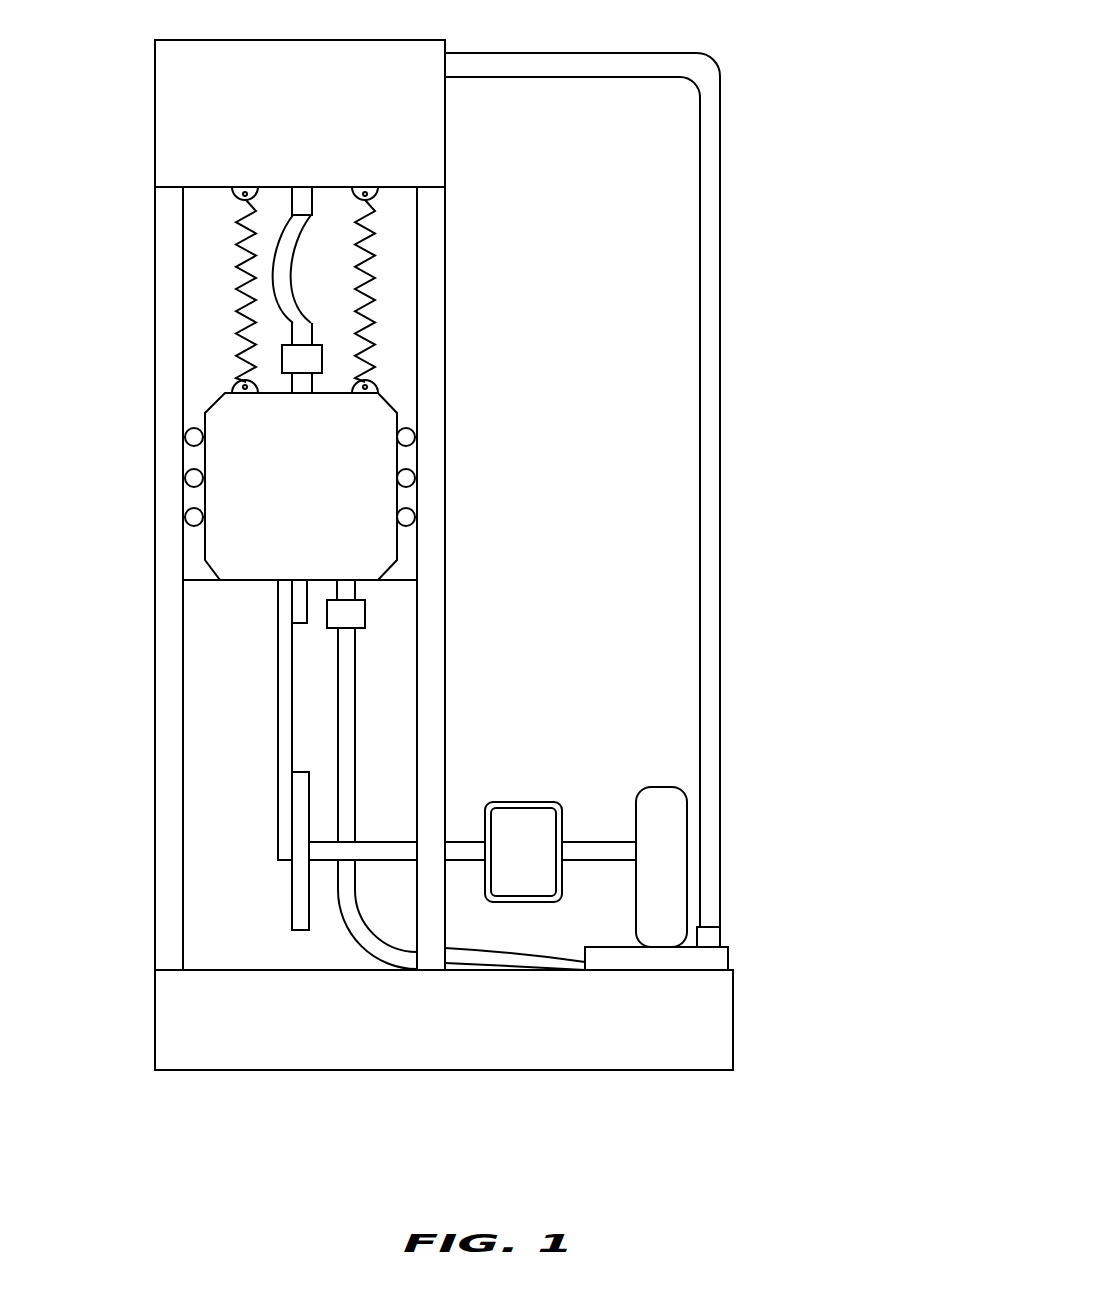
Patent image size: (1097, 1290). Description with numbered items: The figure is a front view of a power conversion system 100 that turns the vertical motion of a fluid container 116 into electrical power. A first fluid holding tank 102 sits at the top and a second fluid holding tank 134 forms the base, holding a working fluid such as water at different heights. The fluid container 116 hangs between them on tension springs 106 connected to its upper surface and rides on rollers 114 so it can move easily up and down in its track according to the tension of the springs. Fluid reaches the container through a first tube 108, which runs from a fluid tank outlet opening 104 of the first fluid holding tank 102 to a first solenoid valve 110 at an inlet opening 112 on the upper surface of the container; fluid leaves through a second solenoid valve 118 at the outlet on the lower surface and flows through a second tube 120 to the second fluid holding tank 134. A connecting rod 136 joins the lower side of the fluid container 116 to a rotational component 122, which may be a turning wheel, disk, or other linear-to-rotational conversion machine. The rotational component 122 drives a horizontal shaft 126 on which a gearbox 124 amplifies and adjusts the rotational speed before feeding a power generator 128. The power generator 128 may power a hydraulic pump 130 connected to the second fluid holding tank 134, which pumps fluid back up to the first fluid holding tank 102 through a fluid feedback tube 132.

The power conversion system 100 is at (835, 45).
The first fluid holding tank 102 is at (155, 108).
The fluid tank outlet opening 104 is at (292, 213).
The tension springs 106 is at (243, 270).
The first tube 108 is at (288, 323).
The first solenoid valve 110 is at (282, 362).
The inlet opening 112 is at (290, 380).
The rollers 114 is at (188, 484).
The fluid container 116 is at (203, 540).
The second solenoid valve 118 is at (327, 615).
The second tube 120 is at (338, 722).
The rotational component 122 is at (292, 912).
The gearbox 124 is at (535, 802).
The horizontal shaft 126 is at (615, 865).
The power generator 128 is at (672, 900).
The hydraulic pump 130 is at (722, 962).
The fluid feedback tube 132 is at (720, 810).
The second fluid holding tank 134 is at (535, 1070).
The connecting rod 136 is at (278, 793).